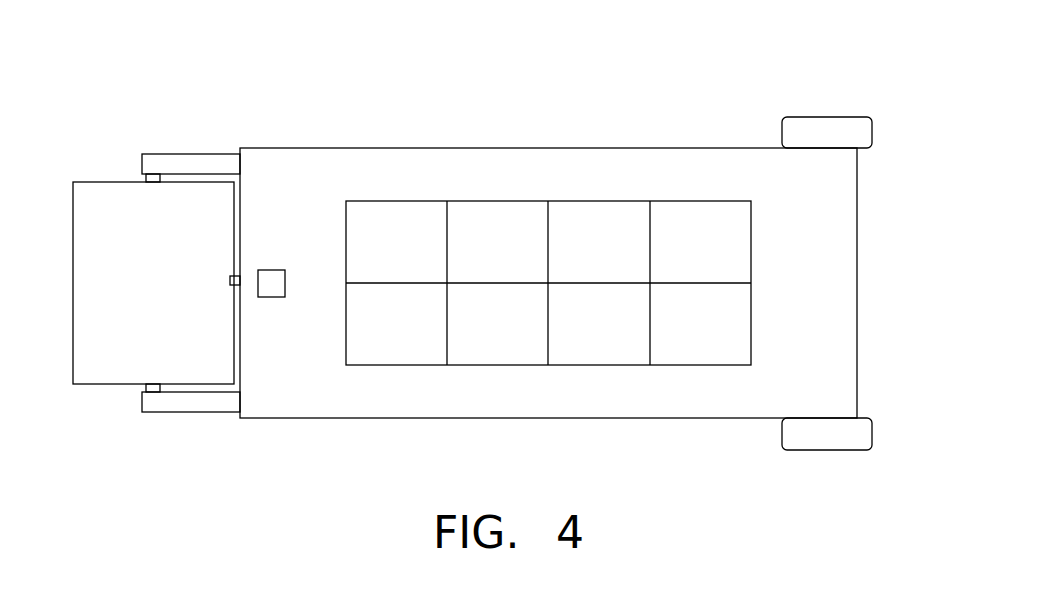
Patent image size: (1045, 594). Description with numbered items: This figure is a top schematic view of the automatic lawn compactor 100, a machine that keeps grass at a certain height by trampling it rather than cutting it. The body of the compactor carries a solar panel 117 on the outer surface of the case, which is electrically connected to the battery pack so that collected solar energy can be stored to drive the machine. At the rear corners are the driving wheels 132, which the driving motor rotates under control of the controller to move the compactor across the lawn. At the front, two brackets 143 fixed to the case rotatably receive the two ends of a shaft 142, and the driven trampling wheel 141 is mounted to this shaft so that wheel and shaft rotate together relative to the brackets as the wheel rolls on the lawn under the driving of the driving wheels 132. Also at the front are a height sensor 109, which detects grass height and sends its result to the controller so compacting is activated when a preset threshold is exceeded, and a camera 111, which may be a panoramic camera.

The automatic lawn compactor 100 is at (479, 76).
The height sensor 109 is at (230, 286).
The camera 111 is at (270, 283).
The solar panel 117 is at (610, 225).
The driving wheel 132 is at (832, 132).
The driven trampling wheel 141 is at (107, 367).
The shaft 142 is at (155, 180).
The brackets 143 is at (200, 162).